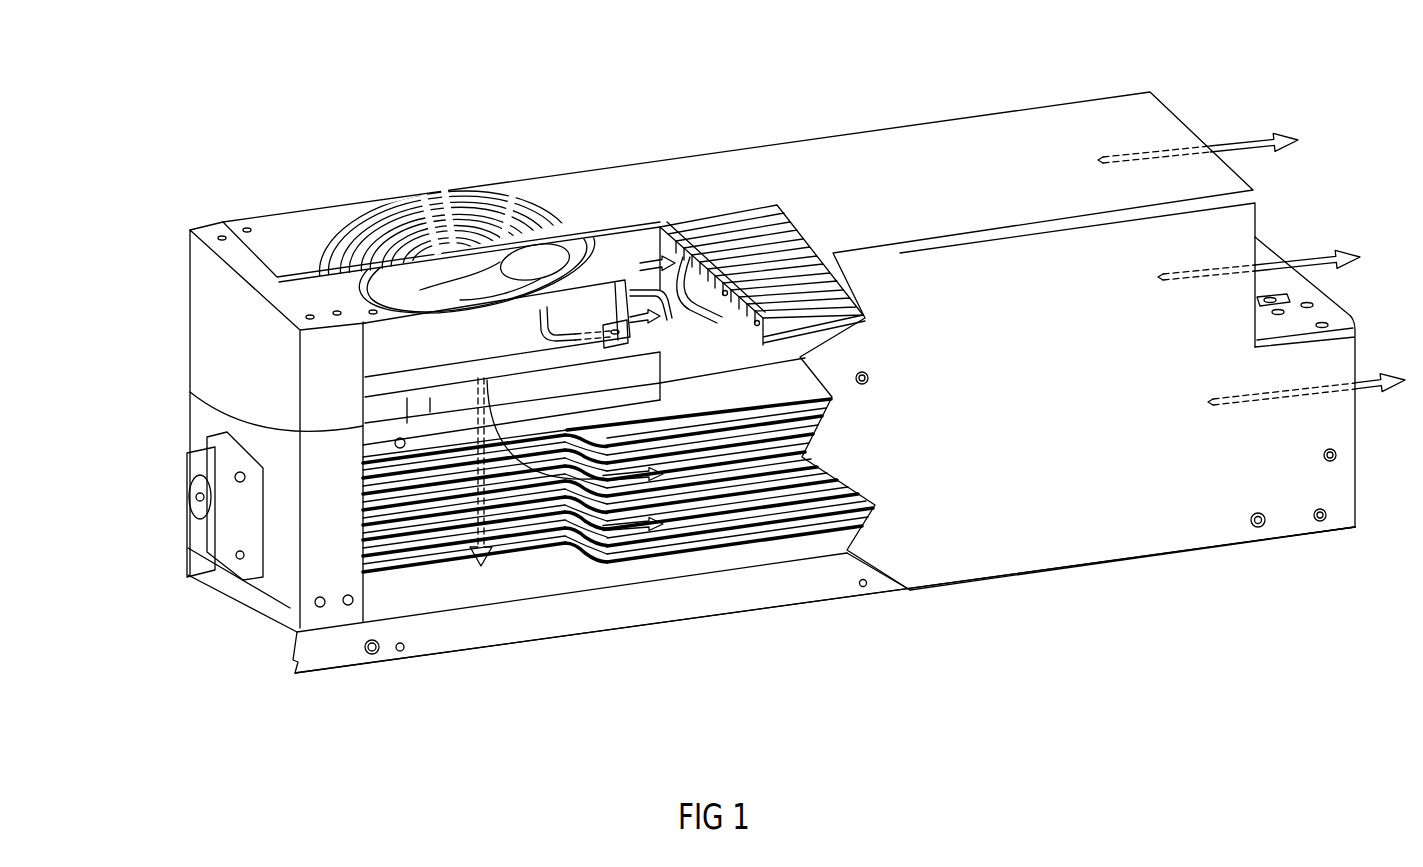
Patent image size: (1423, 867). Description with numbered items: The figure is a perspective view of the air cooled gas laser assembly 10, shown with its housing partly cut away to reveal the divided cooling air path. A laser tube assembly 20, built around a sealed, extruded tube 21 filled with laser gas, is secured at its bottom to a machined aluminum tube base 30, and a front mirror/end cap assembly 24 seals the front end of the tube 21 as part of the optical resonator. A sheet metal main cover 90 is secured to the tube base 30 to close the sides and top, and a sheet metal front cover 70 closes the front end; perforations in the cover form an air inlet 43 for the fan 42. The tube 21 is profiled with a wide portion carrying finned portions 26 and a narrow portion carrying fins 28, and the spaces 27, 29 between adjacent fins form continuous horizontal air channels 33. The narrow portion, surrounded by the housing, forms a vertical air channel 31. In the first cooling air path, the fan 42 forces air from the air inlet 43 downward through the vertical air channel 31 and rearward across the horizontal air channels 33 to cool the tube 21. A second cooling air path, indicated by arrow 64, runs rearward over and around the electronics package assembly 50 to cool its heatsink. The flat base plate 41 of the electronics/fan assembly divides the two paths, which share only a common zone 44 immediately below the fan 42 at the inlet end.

The air cooled gas laser assembly 10 is at (417, 98).
The laser tube assembly 20 is at (593, 605).
The sealed tube 21 is at (580, 567).
The front mirror/end cap assembly 24 is at (185, 488).
The finned portions of the wide portion of the tube 26 is at (785, 497).
The spaces between adjacent finned portions of the wide portion 27 is at (797, 527).
The fins of the narrow portion of the tube 28 is at (410, 567).
The spaces between adjacent fin portions of the narrow portion 29 is at (383, 577).
The tube base 30 is at (823, 573).
The vertical air channel 31 is at (363, 437).
The horizontal air channels 33 is at (680, 490).
The base plate 41 is at (612, 280).
The fan 42 is at (522, 290).
The air inlet 43 is at (382, 215).
The common zone 44 is at (430, 407).
The electronics package assembly 50 is at (842, 298).
The second cooling path arrow 64 is at (757, 228).
The front cover 70 is at (307, 283).
The main cover 90 is at (838, 180).